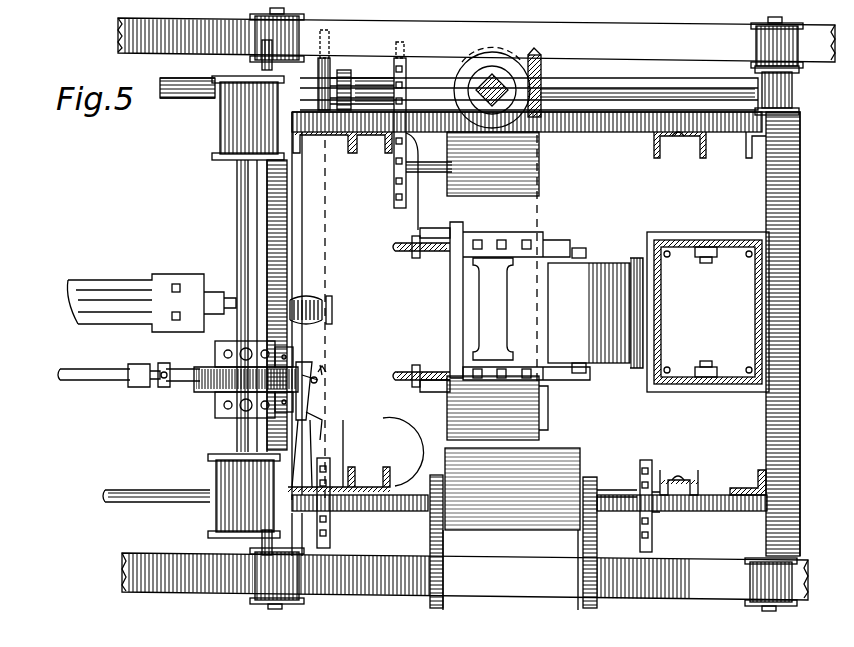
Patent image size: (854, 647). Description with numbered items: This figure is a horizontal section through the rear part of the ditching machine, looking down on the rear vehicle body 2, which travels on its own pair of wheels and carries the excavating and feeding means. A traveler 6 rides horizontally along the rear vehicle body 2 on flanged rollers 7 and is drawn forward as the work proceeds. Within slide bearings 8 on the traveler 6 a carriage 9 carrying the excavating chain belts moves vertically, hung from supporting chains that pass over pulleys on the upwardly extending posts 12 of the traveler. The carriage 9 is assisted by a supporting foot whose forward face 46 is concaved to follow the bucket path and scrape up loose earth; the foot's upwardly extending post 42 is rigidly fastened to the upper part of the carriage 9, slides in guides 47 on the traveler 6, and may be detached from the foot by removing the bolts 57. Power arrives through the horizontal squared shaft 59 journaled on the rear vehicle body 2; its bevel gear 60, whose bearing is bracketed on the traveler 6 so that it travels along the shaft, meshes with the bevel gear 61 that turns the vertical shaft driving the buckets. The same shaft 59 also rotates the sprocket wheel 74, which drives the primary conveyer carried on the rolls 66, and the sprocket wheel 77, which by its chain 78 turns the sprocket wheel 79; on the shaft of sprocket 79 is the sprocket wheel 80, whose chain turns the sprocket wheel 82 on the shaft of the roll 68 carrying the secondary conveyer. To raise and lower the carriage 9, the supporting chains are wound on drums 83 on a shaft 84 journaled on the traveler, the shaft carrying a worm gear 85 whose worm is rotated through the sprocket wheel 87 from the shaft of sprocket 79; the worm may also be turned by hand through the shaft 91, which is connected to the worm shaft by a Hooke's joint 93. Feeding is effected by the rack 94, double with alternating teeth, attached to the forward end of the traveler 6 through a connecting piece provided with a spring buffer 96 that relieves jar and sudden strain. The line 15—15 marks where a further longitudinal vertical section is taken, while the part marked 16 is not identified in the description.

The rear vehicle body 2 is at (476, 309).
The traveler 6 is at (798, 436).
The flanged rollers 7 is at (266, 40).
The slide bearings 8 is at (348, 487).
The carriage 9 is at (414, 250).
The posts 12 is at (372, 140).
The section line 15 is at (51, 371).
The center line 16 is at (394, 160).
The post 42 is at (668, 244).
The forward face 46 is at (640, 390).
The guides 47 is at (702, 148).
The bolts 57 is at (712, 246).
The horizontal squared shaft 59 is at (640, 74).
The bevel gear 60 is at (542, 64).
The bevel gear 61 is at (472, 70).
The rolls 66 is at (497, 286).
The roll 68 is at (533, 529).
The sprocket wheel 74 is at (400, 60).
The sprocket wheel 77 is at (340, 72).
The chain 78 is at (326, 210).
The sprocket wheel 79 is at (323, 525).
The sprocket wheel 80 is at (654, 530).
The sprocket wheel 82 is at (642, 466).
The drums 83 is at (228, 132).
The shaft 84 is at (240, 242).
The worm gear 85 is at (212, 396).
The sprocket wheel 87 is at (298, 362).
The shaft 91 is at (80, 380).
The Hooke's joint 93 is at (146, 386).
The rack 94 is at (98, 320).
The spring buffer 96 is at (311, 300).